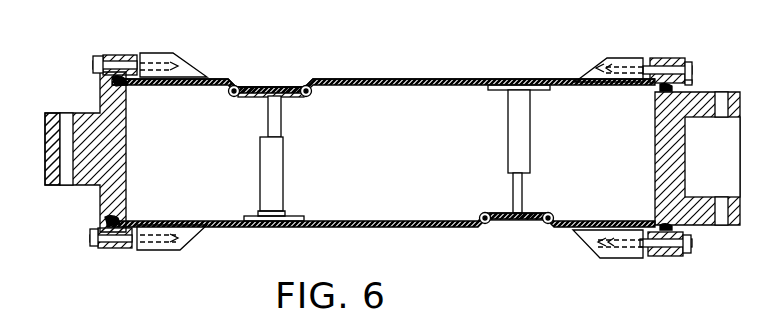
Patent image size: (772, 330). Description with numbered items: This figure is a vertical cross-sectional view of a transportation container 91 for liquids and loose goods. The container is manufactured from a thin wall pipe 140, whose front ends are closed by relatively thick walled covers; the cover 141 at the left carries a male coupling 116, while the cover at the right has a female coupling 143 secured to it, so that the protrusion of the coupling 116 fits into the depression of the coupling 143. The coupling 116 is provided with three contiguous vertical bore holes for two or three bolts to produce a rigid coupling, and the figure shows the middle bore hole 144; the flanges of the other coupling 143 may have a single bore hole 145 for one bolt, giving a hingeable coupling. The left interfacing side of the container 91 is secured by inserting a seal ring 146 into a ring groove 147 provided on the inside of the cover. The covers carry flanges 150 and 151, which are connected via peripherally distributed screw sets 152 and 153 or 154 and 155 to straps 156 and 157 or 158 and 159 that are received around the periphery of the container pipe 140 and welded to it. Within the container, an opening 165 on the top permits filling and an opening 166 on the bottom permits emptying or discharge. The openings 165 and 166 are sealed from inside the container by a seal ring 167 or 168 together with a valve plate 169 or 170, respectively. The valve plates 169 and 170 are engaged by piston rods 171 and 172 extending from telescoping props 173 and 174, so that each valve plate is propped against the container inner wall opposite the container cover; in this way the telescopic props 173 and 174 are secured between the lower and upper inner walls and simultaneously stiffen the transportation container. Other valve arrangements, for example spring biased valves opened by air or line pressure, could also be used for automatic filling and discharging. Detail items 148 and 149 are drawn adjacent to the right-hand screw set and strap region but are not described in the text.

The transportation container 91 is at (352, 77).
The male coupling 116 is at (88, 186).
The thin wall pipe 140 is at (386, 86).
The cover 141 is at (110, 138).
The female coupling 143 is at (733, 118).
The middle bore hole 144 is at (56, 187).
The bore hole 145 is at (718, 224).
The seal ring 146 is at (104, 84).
The ring groove 147 is at (128, 88).
The washer 148 is at (690, 87).
The belt end fastener 149 is at (658, 94).
The flange 150 is at (121, 56).
The flange 151 is at (667, 58).
The screw set 152 is at (99, 58).
The screw set 153 is at (92, 246).
The screw set 154 is at (693, 66).
The screw set 155 is at (695, 254).
The strap 156 is at (204, 72).
The strap 157 is at (194, 240).
The strap 158 is at (586, 72).
The strap 159 is at (591, 258).
The opening 165 is at (280, 86).
The opening 166 is at (512, 224).
The seal ring 167 is at (308, 82).
The seal ring 168 is at (545, 229).
The valve plate 169 is at (290, 97).
The valve plate 170 is at (548, 212).
The piston rod 171 is at (268, 118).
The piston rod 172 is at (514, 186).
The telescoping prop 173 is at (270, 172).
The telescoping prop 174 is at (510, 116).